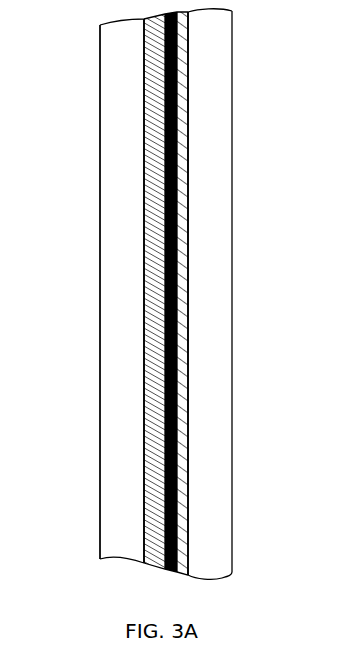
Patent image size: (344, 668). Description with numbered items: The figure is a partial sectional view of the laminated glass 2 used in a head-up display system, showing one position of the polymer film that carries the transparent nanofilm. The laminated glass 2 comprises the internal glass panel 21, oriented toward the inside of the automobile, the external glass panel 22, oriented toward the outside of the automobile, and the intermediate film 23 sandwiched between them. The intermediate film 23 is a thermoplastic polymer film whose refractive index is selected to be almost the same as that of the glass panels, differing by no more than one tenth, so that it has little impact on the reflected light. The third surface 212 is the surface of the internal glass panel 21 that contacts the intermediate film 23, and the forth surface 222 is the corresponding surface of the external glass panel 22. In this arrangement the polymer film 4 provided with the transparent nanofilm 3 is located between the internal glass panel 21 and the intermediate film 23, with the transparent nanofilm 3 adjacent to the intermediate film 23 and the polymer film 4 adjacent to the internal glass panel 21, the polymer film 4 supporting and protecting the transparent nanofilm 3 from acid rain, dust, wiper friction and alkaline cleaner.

The laminated glass 2 is at (240, 518).
The internal glass panel 21 is at (212, 130).
The third surface 212 is at (187, 190).
The external glass panel 22 is at (115, 138).
The forth surface 222 is at (143, 487).
The intermediate film 23 is at (151, 410).
The transparent nanofilm 3 is at (178, 241).
The polymer film 4 is at (178, 362).